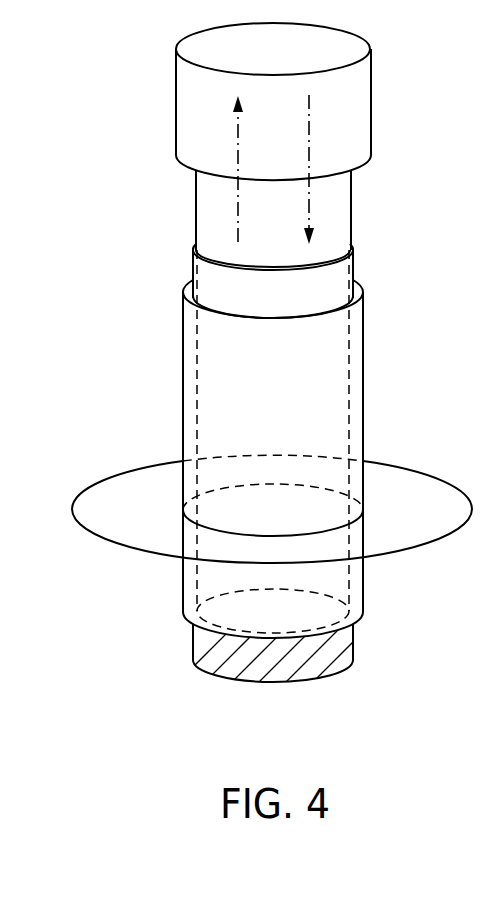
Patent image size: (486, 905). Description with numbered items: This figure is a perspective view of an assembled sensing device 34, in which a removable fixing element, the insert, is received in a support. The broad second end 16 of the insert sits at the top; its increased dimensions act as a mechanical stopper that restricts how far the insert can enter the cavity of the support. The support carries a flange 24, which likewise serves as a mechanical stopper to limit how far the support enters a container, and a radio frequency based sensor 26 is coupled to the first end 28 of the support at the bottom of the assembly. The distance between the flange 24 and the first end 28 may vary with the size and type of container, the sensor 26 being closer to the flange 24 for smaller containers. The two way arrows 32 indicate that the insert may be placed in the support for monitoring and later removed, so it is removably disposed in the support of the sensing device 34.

The second end of the insert 16 is at (187, 104).
The flange 24 is at (143, 477).
The radio frequency based sensor 26 is at (197, 648).
The first end of the support 28 is at (322, 612).
The two way arrows 32 is at (237, 200).
The sensing device 34 is at (365, 376).